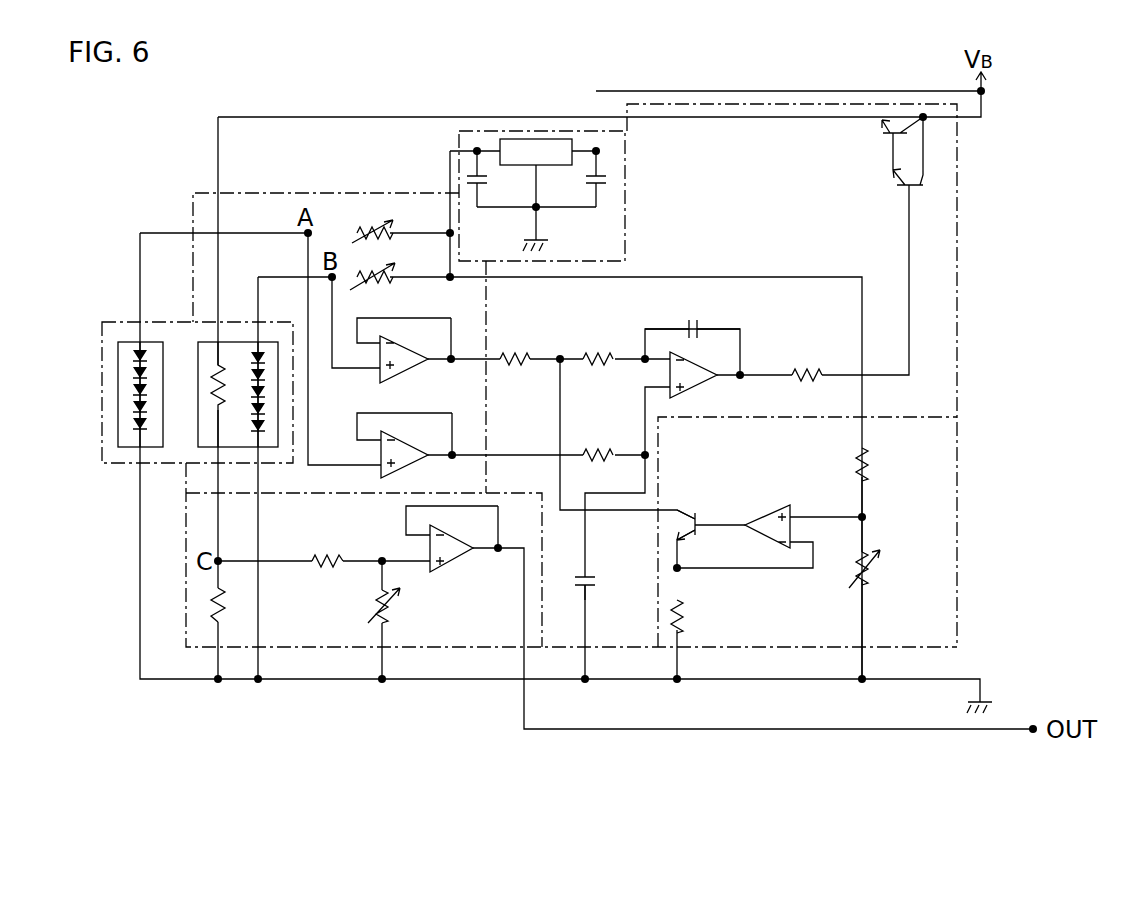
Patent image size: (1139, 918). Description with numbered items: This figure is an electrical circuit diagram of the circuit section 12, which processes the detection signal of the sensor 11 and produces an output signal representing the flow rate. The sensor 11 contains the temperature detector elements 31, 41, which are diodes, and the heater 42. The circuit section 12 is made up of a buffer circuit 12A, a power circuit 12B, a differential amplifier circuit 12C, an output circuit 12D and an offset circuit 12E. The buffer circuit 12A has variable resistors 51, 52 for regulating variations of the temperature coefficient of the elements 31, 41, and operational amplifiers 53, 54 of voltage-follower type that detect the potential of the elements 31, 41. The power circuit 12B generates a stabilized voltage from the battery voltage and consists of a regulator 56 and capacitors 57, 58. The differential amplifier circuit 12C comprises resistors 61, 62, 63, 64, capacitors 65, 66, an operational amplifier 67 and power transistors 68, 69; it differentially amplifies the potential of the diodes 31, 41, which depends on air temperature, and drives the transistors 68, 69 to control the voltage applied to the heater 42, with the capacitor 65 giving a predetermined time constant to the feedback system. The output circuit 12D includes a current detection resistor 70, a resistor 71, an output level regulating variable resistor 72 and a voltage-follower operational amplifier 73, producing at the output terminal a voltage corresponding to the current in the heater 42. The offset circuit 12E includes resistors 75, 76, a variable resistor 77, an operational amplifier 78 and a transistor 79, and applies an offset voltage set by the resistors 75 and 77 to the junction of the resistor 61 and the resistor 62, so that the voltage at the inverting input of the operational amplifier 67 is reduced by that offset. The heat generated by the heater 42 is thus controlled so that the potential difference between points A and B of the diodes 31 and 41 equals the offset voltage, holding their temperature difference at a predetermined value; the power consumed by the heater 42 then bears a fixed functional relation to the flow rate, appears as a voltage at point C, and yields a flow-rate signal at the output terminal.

The sensor 11 is at (125, 322).
The circuit section 12 is at (840, 80).
The buffer circuit 12A is at (318, 190).
The power circuit 12B is at (478, 130).
The differential amplifier circuit 12C is at (957, 298).
The output circuit 12D is at (487, 648).
The offset circuit 12E is at (957, 610).
The temperature detector element 31 is at (130, 356).
The temperature detector element 41 is at (256, 370).
The heater 42 is at (212, 378).
The variable resistor 51 is at (366, 224).
The variable resistor 52 is at (392, 280).
The operational amplifier 53 is at (418, 365).
The operational amplifier 54 is at (418, 461).
The regulator 56 is at (548, 140).
The capacitor 57 is at (482, 172).
The capacitor 58 is at (598, 172).
The resistor 61 is at (514, 352).
The resistor 62 is at (599, 352).
The resistor 63 is at (601, 448).
The resistor 64 is at (807, 368).
The capacitor 65 is at (705, 320).
The capacitor 66 is at (598, 586).
The operational amplifier 67 is at (705, 385).
The power transistor 68 is at (899, 190).
The power transistor 69 is at (888, 138).
The current detection resistor 70 is at (214, 598).
The resistor 71 is at (326, 570).
The output level regulating variable resistor 72 is at (394, 610).
The operational amplifier 73 is at (455, 560).
The resistor 75 is at (870, 452).
The resistor 76 is at (686, 612).
The variable resistor 77 is at (876, 568).
The operational amplifier 78 is at (772, 506).
The transistor 79 is at (698, 510).